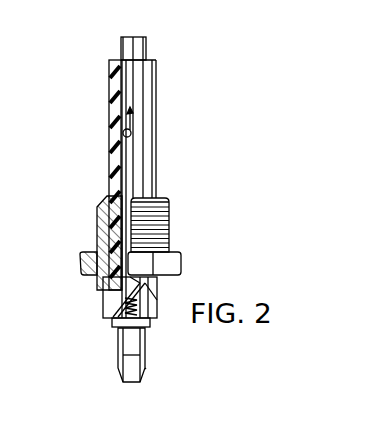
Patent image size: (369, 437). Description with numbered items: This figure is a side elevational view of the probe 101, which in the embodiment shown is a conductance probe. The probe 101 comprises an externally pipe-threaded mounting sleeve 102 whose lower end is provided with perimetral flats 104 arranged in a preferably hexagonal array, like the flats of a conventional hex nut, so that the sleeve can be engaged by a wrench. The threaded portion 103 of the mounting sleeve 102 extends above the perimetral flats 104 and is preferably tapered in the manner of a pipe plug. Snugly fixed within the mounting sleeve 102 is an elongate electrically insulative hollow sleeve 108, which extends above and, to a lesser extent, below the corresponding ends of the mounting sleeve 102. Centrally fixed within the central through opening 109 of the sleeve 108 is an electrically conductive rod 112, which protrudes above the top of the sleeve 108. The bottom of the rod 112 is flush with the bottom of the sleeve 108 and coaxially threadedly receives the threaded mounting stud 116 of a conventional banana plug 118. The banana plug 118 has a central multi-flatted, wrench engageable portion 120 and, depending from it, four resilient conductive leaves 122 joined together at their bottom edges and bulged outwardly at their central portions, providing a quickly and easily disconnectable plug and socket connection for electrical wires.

The probe 101 is at (167, 108).
The mounting sleeve 102 is at (172, 221).
The threaded portion 103 is at (171, 210).
The perimetral flats 104 is at (176, 265).
The electrically insulative hollow sleeve 108 is at (112, 118).
The central through opening 109 is at (123, 134).
The electrically conductive rod 112 is at (139, 40).
The threaded mounting stud 116 is at (120, 305).
The banana plug 118 is at (153, 349).
The wrench engageable portion 120 is at (146, 327).
The resilient conductive leaves 122 is at (145, 368).